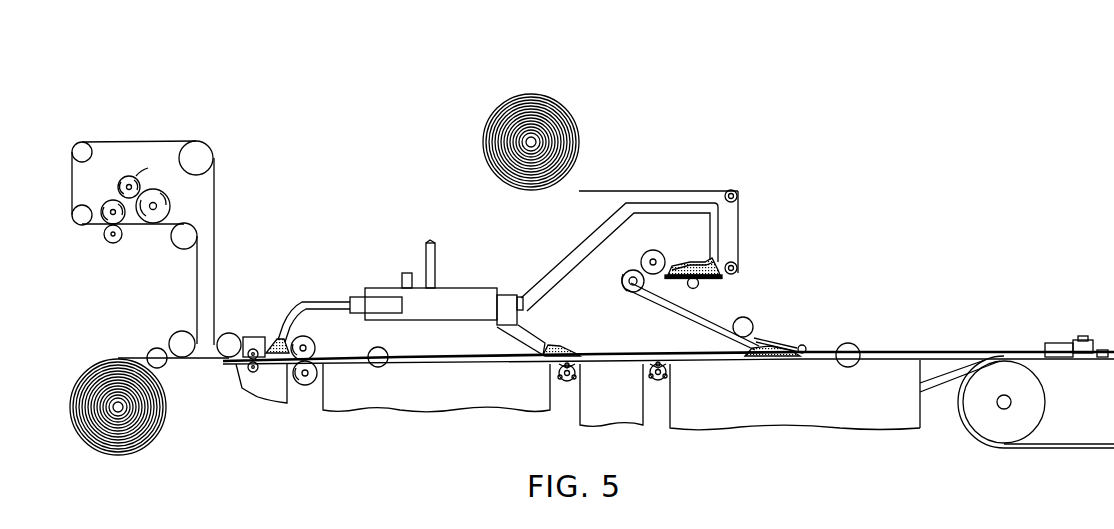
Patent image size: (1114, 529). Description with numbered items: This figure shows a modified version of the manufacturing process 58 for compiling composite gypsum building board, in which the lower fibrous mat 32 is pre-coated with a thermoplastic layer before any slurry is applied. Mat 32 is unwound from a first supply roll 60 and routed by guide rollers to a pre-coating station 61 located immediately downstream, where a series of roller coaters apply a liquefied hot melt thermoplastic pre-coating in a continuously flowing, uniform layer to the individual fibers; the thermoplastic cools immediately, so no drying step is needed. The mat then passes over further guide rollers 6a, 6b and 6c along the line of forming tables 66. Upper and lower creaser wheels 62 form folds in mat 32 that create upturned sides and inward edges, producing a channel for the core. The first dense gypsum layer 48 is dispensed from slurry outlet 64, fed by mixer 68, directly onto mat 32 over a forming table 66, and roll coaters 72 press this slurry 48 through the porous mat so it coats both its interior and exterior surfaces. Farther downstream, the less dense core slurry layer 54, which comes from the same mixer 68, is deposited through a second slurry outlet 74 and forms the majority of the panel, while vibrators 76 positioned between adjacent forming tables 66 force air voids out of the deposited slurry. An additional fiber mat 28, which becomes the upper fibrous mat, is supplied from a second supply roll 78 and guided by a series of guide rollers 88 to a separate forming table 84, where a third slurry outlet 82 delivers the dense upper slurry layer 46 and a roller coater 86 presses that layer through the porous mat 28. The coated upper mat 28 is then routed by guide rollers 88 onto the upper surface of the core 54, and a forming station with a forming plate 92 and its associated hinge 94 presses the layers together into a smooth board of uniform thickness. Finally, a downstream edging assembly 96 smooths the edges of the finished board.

The guide roller 6a is at (149, 352).
The guide roller 6b is at (372, 366).
The guide roller 6c is at (855, 345).
The fiber mat 28 is at (585, 185).
The lower fibrous mat 32 is at (130, 357).
The dense upper slurry layer 46 is at (688, 264).
The first gypsum layer 48 is at (273, 345).
The core slurry layer 54 is at (578, 350).
The process 58 is at (865, 173).
The first supply roll 60 is at (108, 443).
The pre-coating station 61 is at (157, 176).
The creaser wheels 62 is at (248, 334).
The slurry outlet 64 is at (282, 338).
The forming table 66 is at (273, 390).
The mixer 68 is at (436, 282).
The roll coaters 72 is at (311, 342).
The second slurry outlet 74 is at (543, 343).
The vibrators 76 is at (563, 381).
The second supply roll 78 is at (567, 122).
The third slurry outlet 82 is at (712, 262).
The forming table 84 is at (715, 281).
The roller coater 86 is at (658, 250).
The guide rollers 88 is at (738, 196).
The forming plate 92 is at (782, 348).
The hinge 94 is at (808, 349).
The edging assembly 96 is at (1063, 350).